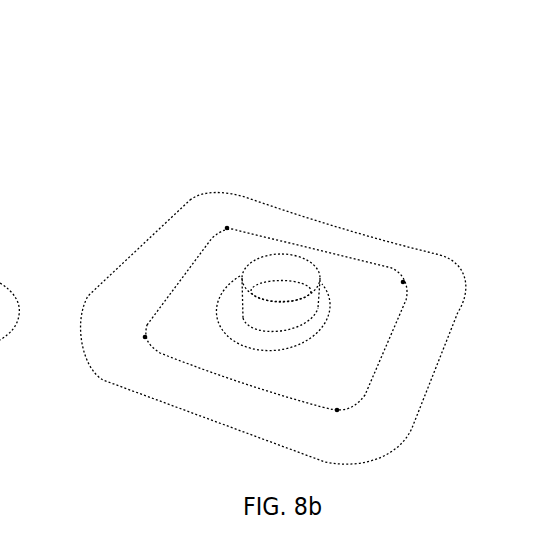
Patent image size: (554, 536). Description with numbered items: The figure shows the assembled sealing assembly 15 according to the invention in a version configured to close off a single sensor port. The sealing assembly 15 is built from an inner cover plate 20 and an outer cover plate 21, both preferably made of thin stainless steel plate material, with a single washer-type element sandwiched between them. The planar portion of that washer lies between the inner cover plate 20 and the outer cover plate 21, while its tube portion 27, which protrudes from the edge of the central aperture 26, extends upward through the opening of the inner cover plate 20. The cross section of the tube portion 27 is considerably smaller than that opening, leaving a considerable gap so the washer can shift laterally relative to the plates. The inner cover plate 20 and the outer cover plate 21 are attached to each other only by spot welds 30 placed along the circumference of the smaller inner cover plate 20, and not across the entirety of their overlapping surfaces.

The sealing assembly 15 is at (235, 241).
The inner cover plate 20 is at (367, 282).
The outer cover plate 21 is at (216, 203).
The central aperture 26 is at (282, 292).
The tube portion 27 is at (253, 305).
The spot welds 30 is at (333, 415).